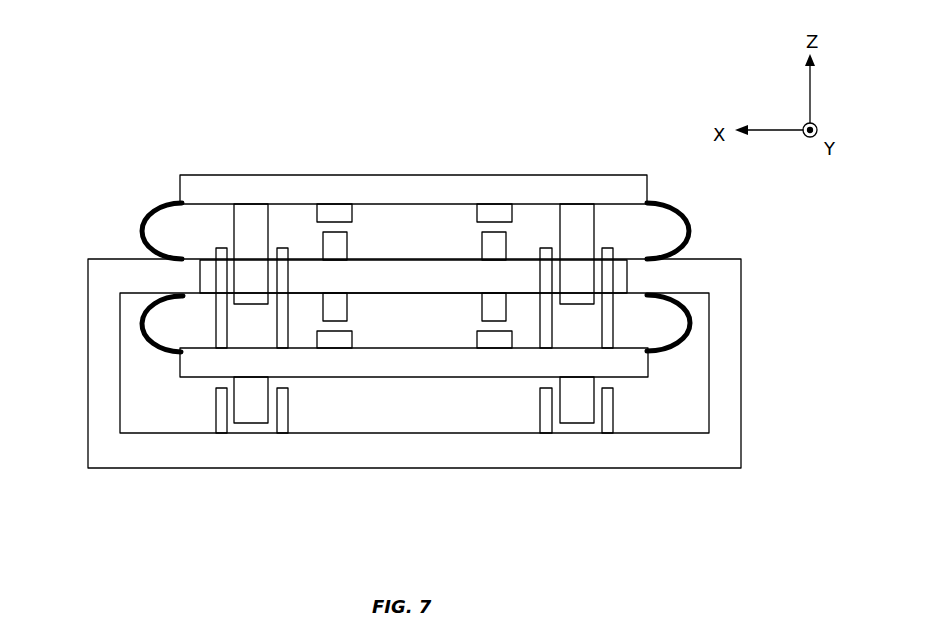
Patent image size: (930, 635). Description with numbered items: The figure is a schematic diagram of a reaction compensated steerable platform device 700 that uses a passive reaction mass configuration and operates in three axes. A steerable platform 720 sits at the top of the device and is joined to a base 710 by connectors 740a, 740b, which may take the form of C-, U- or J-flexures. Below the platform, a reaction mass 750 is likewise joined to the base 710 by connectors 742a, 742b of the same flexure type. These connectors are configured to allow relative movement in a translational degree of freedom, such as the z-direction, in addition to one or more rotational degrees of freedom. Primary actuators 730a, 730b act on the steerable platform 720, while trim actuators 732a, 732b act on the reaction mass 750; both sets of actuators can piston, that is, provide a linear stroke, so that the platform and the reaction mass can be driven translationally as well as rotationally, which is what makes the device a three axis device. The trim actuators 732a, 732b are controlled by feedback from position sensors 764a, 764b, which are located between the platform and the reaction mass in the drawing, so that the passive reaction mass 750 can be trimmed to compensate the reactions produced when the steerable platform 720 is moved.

The reaction compensated steerable platform device 700 is at (405, 275).
The base 710 is at (88, 348).
The steerable platform 720 is at (418, 175).
The primary actuator 730a is at (213, 234).
The primary actuator 730b is at (620, 232).
The trim actuator 732a is at (198, 412).
The trim actuator 732b is at (628, 412).
The connector 740a is at (141, 232).
The connector 740b is at (690, 231).
The connector 742a is at (141, 325).
The connector 742b is at (690, 323).
The reaction mass 750 is at (180, 372).
The position sensor 764a is at (355, 322).
The position sensor 764b is at (473, 327).